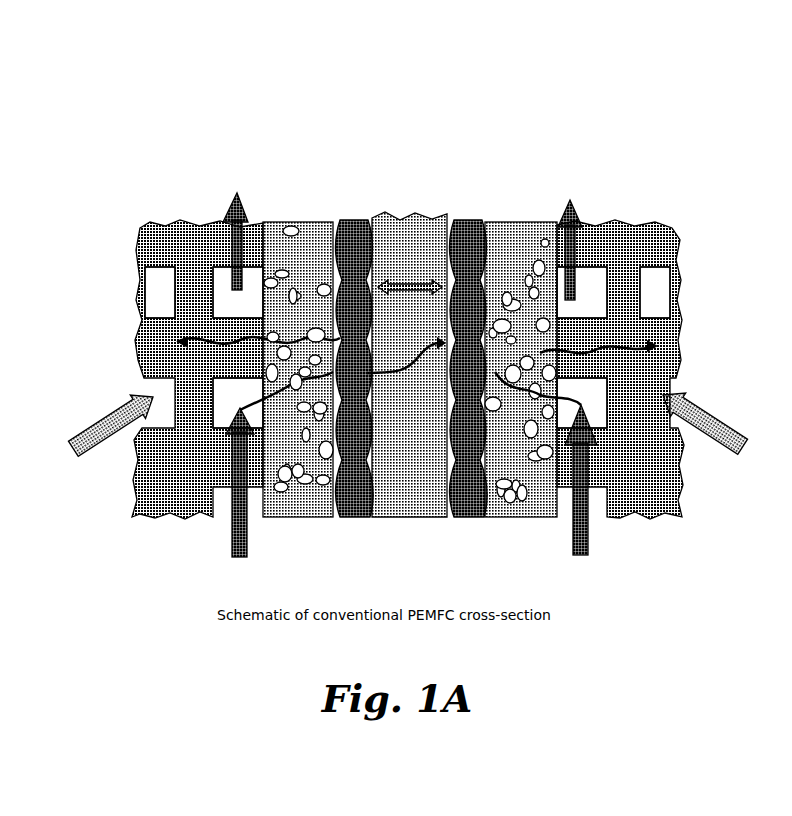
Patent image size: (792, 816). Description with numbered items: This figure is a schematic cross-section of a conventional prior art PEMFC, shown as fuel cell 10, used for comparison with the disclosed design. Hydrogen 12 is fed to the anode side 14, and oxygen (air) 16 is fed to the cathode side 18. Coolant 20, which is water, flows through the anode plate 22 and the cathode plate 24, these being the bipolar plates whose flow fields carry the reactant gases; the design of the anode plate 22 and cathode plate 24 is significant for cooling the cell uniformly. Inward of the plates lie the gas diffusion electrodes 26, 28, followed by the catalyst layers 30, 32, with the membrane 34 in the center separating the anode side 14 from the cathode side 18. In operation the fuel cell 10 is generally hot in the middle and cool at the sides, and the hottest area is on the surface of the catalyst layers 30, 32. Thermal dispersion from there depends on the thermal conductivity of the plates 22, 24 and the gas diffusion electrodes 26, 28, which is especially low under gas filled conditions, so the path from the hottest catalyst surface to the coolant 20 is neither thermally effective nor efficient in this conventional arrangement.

The conventional fuel cell 10 is at (418, 106).
The hydrogen 12 is at (279, 481).
The anode side 14 is at (190, 529).
The oxygen (air) 16 is at (555, 481).
The cathode side 18 is at (660, 530).
The coolant 20 is at (408, 416).
The anode plate 22 is at (187, 272).
The cathode plate 24 is at (625, 262).
The gas diffusion electrode 26 is at (292, 230).
The gas diffusion electrode 28 is at (516, 232).
The catalyst layer 30 is at (296, 177).
The catalyst layer 32 is at (466, 230).
The membrane 34 is at (413, 245).